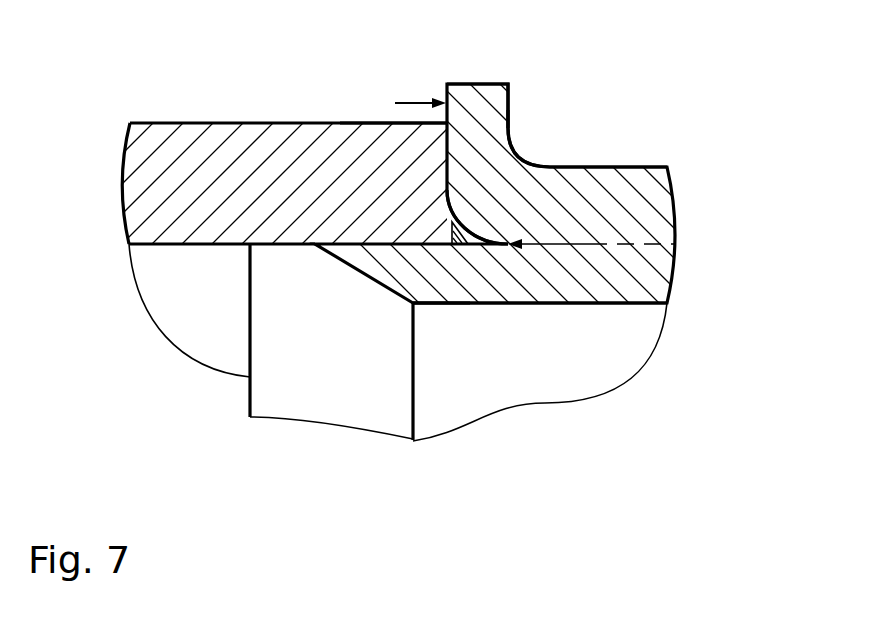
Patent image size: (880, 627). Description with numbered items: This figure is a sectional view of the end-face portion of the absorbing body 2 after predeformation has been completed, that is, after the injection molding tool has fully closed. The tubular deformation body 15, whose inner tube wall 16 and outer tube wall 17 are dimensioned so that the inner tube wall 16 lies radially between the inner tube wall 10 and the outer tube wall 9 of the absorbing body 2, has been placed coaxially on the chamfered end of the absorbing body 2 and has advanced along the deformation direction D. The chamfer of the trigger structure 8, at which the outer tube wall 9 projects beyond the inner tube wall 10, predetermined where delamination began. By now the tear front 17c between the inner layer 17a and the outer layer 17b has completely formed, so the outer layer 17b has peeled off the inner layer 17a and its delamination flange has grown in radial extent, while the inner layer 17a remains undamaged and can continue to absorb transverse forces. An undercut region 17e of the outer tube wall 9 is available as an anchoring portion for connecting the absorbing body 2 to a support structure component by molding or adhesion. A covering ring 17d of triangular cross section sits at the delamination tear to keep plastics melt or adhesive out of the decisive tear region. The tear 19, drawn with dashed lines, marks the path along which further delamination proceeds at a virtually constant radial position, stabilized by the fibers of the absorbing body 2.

The absorbing body 2 is at (591, 150).
The trigger structure 8 is at (372, 278).
The outer tube wall 9 is at (625, 166).
The inner tube wall 10 is at (605, 304).
The deformation body 15 is at (291, 111).
The inner tube wall of the deformation body 16 is at (203, 245).
The outer tube wall of the deformation body 17 is at (368, 122).
The inner layer 17a is at (448, 296).
The outer layer 17b is at (470, 100).
The tear front 17c is at (493, 245).
The covering ring 17d is at (455, 244).
The undercut region 17e is at (509, 105).
The tear 19 is at (607, 243).
The deformation direction D is at (419, 81).